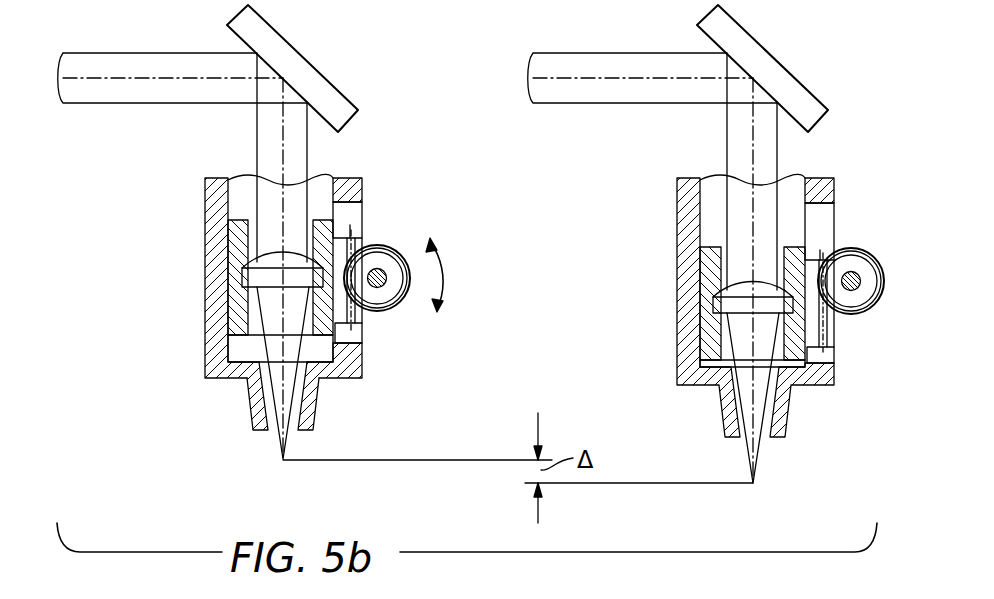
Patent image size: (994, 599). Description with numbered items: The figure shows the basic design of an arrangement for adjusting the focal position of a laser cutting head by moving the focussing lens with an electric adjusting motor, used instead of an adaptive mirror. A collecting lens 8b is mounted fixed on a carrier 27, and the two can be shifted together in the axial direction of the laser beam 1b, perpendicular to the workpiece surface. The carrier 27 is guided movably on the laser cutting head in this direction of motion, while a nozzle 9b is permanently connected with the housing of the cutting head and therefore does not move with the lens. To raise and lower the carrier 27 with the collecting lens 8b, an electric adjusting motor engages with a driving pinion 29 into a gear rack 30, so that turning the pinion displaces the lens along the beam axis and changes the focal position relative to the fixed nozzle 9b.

The laser beam 1b is at (152, 88).
The collecting lens 8b is at (267, 276).
The carrier 27 is at (242, 306).
The nozzle 9b is at (260, 407).
The gear rack 30 is at (349, 238).
The driving pinion 29 is at (387, 292).